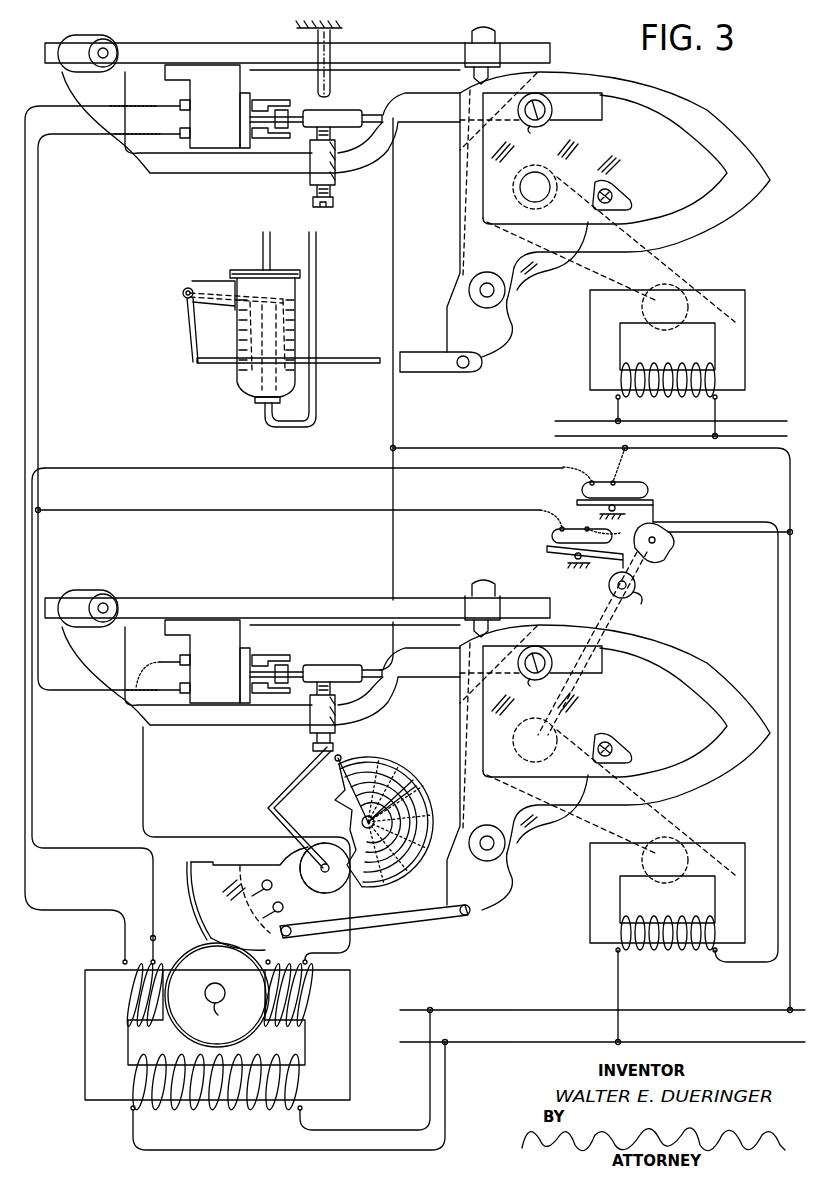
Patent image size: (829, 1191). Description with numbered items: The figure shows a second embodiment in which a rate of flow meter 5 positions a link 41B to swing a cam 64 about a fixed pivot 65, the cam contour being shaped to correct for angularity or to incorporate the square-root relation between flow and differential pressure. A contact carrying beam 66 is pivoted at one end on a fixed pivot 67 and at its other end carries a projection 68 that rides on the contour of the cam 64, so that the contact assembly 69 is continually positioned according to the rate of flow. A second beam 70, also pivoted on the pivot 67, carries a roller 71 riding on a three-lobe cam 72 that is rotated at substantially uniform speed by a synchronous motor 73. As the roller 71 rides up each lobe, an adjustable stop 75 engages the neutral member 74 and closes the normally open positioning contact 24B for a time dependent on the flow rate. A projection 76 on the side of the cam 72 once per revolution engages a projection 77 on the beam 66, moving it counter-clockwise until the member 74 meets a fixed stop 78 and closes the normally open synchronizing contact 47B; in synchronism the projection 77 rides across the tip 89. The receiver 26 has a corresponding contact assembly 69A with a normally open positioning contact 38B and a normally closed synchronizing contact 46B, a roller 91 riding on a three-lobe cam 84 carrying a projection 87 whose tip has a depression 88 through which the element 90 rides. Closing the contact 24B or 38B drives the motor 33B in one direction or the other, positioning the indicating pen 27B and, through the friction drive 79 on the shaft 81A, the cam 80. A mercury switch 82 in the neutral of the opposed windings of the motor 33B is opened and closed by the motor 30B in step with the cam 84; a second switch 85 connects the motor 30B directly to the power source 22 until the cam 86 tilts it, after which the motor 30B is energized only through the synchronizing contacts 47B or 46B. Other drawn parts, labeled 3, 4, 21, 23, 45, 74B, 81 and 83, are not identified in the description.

The contact carrying beam 66 is at (198, 45).
The fixed pivot 67 is at (103, 40).
The second beam 70 is at (184, 178).
The contact assembly 69 is at (243, 76).
The positioning contact 24B is at (298, 96).
The synchronizing contact 47B is at (297, 132).
The neutral member 74 is at (332, 110).
The adjustable stop 75 is at (330, 140).
The fixed stop 78 is at (334, 76).
The armature frame 81 is at (261, 686).
The contact assembly 69A is at (221, 661).
The positioning contact 38B is at (283, 662).
The dashpot 74B is at (342, 663).
The synchronizing contact 46B is at (301, 716).
The projection 68 is at (468, 78).
The cam 64 is at (708, 112).
The roller 71 is at (554, 100).
The projection 77 is at (536, 119).
The tip 89 is at (642, 228).
The projection 76 is at (616, 172).
The three-lobe cam 72 is at (625, 146).
The fixed pivot 65 is at (495, 302).
The link 41B is at (409, 372).
The synchronous motor 73 is at (588, 364).
The cam 80 is at (608, 765).
The roller 91 is at (542, 688).
The element 90 is at (535, 673).
The depression 88 is at (631, 748).
The projection 87 is at (615, 733).
The three-lobe cam 84 is at (570, 759).
The motor 30B is at (646, 894).
The rate of flow meter 5 is at (254, 336).
The tube 3 is at (317, 270).
The rod 4 is at (262, 258).
The conductor 23 is at (25, 266).
The conductor 45 is at (38, 328).
The power source 22 is at (648, 1010).
The supply line 21 is at (648, 1042).
The mercury switch 82 is at (642, 480).
The switch 85 is at (548, 536).
The ratchet wheel 83 is at (670, 556).
The cam 86 is at (640, 604).
The receiver 26 is at (344, 807).
The indicating pen 27B is at (373, 768).
The friction driving device 79 is at (192, 912).
The motor 33B is at (85, 1052).
The shaft 81A is at (217, 995).